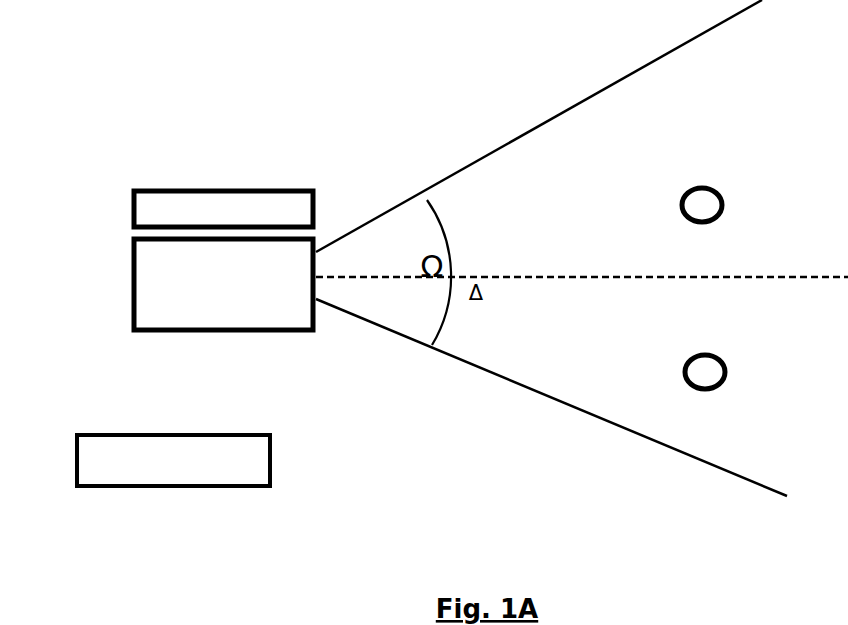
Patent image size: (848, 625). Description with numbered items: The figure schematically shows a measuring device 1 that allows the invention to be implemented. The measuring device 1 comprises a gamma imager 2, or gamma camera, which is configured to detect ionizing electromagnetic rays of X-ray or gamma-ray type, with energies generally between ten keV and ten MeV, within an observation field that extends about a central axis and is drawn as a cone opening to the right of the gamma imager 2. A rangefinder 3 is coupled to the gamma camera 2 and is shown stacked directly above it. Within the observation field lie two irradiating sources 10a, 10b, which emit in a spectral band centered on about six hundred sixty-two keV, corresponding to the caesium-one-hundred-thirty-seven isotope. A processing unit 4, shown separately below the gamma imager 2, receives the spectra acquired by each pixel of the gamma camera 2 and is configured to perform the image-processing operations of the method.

The measuring device 1 is at (82, 157).
The gamma imager 2 is at (144, 303).
The rangefinder 3 is at (141, 202).
The processing unit 4 is at (98, 447).
The irradiating source 10a is at (668, 203).
The irradiating source 10b is at (671, 367).